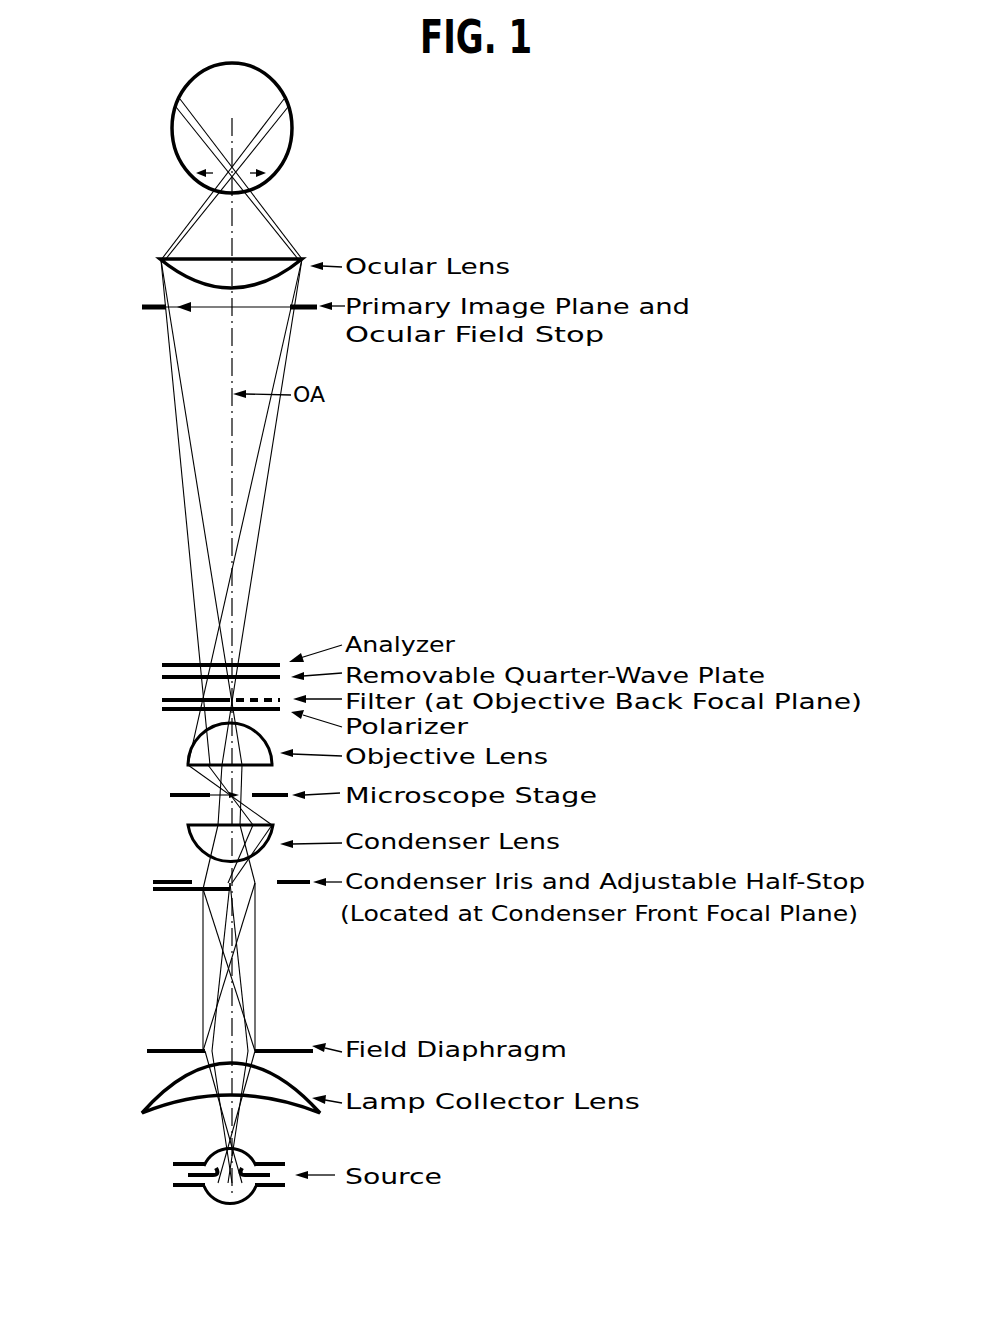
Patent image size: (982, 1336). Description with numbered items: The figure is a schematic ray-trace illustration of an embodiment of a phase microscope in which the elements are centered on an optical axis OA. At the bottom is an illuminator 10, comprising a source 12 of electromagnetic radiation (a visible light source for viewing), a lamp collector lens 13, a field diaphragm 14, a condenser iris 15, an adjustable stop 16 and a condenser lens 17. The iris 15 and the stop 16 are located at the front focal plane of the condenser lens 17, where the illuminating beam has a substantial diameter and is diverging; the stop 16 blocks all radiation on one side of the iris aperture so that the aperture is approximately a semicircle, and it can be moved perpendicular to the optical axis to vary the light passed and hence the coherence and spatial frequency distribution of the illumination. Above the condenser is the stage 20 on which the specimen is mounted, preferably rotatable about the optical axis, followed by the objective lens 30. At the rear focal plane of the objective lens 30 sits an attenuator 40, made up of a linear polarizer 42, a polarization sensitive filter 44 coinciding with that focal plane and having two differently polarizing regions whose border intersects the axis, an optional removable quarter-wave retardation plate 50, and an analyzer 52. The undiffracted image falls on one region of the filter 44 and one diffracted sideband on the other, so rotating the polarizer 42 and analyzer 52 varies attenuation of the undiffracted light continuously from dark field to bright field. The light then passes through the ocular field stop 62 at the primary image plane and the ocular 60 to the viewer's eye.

The illuminator 10 is at (146, 1017).
The source 12 is at (156, 1175).
The lamp collector lens 13 is at (150, 1088).
The field diaphragm 14 is at (150, 1053).
The condenser iris 15 is at (165, 878).
The adjustable stop 16 is at (170, 892).
The condenser lens 17 is at (200, 837).
The stage 20 is at (170, 794).
The objective lens 30 is at (192, 752).
The attenuator 40 is at (97, 652).
The linear polarizer 42 is at (163, 709).
The polarization sensitive filter 44 is at (163, 699).
The quarter-wave retardation plate 50 is at (165, 677).
The analyzer 52 is at (178, 663).
The ocular 60 is at (175, 263).
The ocular field stop 62 is at (152, 313).